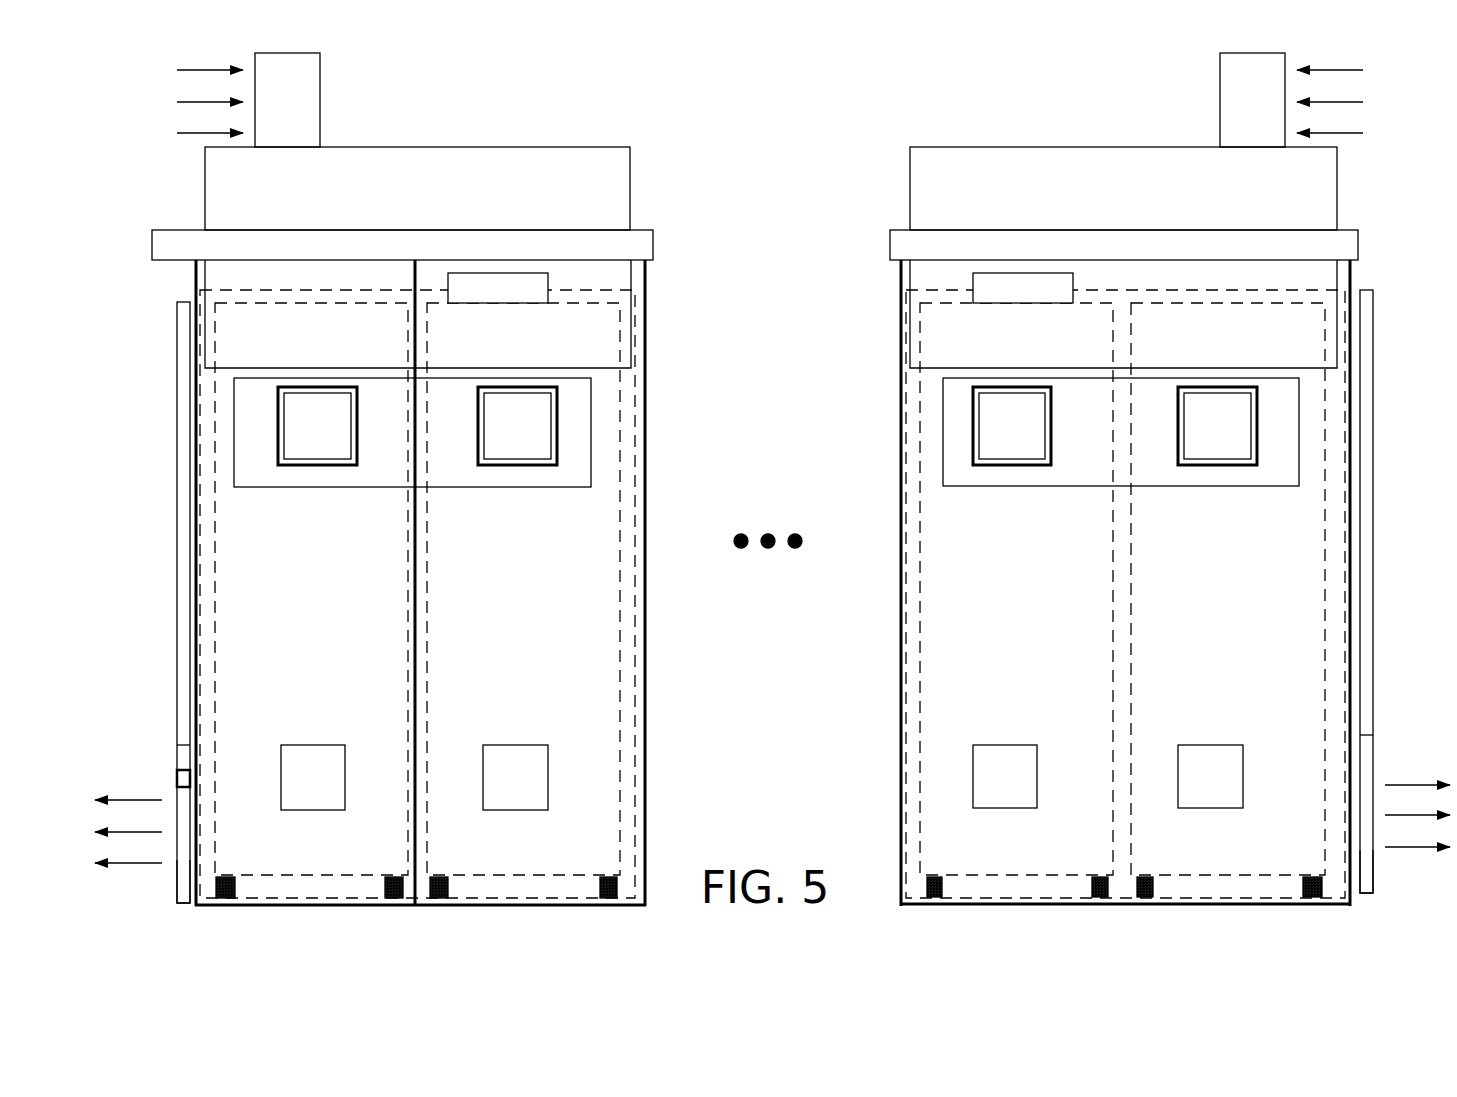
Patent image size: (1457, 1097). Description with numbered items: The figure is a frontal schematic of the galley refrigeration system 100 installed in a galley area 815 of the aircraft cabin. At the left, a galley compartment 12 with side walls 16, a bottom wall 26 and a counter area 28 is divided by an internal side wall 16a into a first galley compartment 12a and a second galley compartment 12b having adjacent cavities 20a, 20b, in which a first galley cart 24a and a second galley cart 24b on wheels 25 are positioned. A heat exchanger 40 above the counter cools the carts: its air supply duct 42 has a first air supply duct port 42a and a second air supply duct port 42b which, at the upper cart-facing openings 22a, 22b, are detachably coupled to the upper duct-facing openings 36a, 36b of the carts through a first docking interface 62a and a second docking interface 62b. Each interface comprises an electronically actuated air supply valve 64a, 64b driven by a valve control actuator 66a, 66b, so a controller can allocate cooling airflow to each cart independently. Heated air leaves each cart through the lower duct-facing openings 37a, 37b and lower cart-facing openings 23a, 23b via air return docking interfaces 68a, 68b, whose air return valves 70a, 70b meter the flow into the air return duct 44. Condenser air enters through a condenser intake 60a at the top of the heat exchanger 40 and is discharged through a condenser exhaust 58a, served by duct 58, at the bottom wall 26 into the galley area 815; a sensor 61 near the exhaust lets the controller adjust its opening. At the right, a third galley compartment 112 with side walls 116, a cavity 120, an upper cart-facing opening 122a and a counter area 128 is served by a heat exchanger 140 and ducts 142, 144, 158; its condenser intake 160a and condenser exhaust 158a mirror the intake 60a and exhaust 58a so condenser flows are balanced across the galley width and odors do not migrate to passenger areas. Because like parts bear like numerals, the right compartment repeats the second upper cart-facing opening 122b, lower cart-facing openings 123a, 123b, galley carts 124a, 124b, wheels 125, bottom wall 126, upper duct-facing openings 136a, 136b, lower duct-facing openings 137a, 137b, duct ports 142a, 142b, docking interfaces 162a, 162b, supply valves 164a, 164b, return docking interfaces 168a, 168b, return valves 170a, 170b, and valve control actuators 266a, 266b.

The galley refrigeration system 100 is at (497, 503).
The galley area 815 is at (497, 503).
The galley compartment 12 is at (661, 130).
The first galley compartment 12a is at (265, 660).
The second galley compartment 12b is at (578, 672).
The side walls 16 is at (196, 280).
The internal side wall 16a is at (415, 562).
The first cavity 20a is at (258, 320).
The second cavity 20b is at (578, 323).
The upper cart-facing opening 22a is at (230, 433).
The second upper cart-facing opening 22b is at (590, 429).
The lower cart-facing opening 23a is at (213, 747).
The second lower cart-facing opening 23b is at (593, 747).
The first galley cart 24a is at (309, 592).
The second galley cart 24b is at (521, 592).
The wheels 25 is at (225, 898).
The bottom wall 26 is at (437, 905).
The counter area 28 is at (402, 245).
The upper duct-facing opening 36a is at (327, 392).
The second upper duct-facing opening 36b is at (527, 392).
The lower duct-facing opening 37a is at (323, 745).
The second lower duct-facing opening 37b is at (523, 745).
The heat exchanger 40 is at (417, 188).
The air supply duct 42 is at (380, 488).
The first air supply duct port 42a is at (312, 464).
The second air supply duct port 42b is at (548, 466).
The air return duct 44 is at (498, 288).
The duct 58 is at (177, 558).
The condenser exhaust 58a is at (177, 888).
The condenser intake 60a is at (248, 100).
The sensor 61 is at (177, 778).
The air supply docking interface 62a is at (230, 433).
The second docking interface 62b is at (590, 429).
The electronically actuated air supply valve 64a is at (317, 426).
The second electronically actuated valve 64b is at (517, 426).
The valve control actuator 66a is at (268, 431).
The valve control actuator 66b is at (568, 427).
The air return docking interface 68a is at (265, 742).
The second air return docking interface 68b is at (570, 757).
The air return valve 70a is at (313, 777).
The second air return valve 70b is at (515, 777).
The third galley compartment 112 is at (1175, 905).
The side walls 116 is at (1355, 275).
The third cavity 120 is at (1293, 633).
The upper cart-facing opening 122a is at (920, 429).
The second enclosure second inlet flow 122b is at (1282, 429).
The second enclosure first outlet flow 123a is at (901, 746).
The second enclosure second outlet flow 123b is at (1292, 730).
The second enclosure first interior space 124a is at (1011, 592).
The second enclosure second interior space 124b is at (1228, 592).
The second enclosure support foot 125 is at (935, 898).
The second enclosure floor 126 is at (1063, 905).
The counter area 128 is at (1124, 245).
The second enclosure first electronics housing 136a is at (1030, 392).
The second enclosure second electronics housing 136b is at (1232, 392).
The second enclosure first lower housing 137a is at (1027, 745).
The second enclosure second lower housing 137b is at (1228, 745).
The heat exchanger 140 is at (1123, 188).
The duct 142 is at (1083, 488).
The second rack first portion 142a is at (1028, 466).
The second rack second portion 142b is at (1240, 466).
The duct 144 is at (1023, 288).
The duct 158 is at (1378, 347).
The condenser exhaust 158a is at (1375, 878).
The condenser intake 160a is at (1291, 100).
The second enclosure first air path 162a is at (920, 429).
The second enclosure second air path 162b is at (1282, 429).
The second enclosure first battery module 164a is at (1012, 426).
The second enclosure second battery module 164b is at (1217, 426).
The second enclosure first exhaust flow 168a is at (958, 753).
The second enclosure second exhaust flow 168b is at (1263, 735).
The second enclosure first power converter 170a is at (1005, 776).
The second enclosure second power converter 170b is at (1210, 776).
The first cooling airflow 266a is at (963, 425).
The second cooling airflow 266b is at (1275, 420).